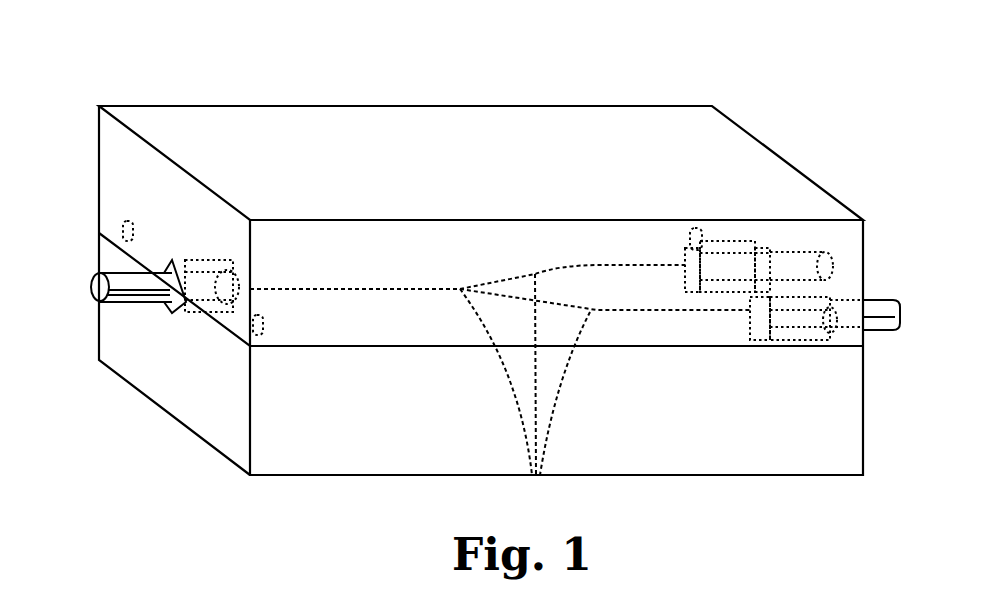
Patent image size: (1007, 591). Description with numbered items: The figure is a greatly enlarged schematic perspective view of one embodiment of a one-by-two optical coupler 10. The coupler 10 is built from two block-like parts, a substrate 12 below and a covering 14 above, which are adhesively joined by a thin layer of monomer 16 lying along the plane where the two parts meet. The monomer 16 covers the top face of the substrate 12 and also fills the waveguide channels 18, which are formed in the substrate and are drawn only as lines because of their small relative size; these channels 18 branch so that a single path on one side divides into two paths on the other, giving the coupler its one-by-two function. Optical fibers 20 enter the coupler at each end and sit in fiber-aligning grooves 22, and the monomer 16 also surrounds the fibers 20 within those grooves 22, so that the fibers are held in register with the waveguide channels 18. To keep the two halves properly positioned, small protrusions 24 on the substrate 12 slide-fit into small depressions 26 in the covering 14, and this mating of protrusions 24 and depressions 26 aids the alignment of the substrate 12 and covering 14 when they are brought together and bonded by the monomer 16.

The optical coupler 10 is at (481, 275).
The substrate 12 is at (329, 480).
The covering 14 is at (302, 100).
The monomer 16 is at (247, 330).
The waveguide channels 18 is at (500, 386).
The optical fibers 20 is at (92, 287).
The fiber-aligning grooves 22 is at (195, 260).
The protrusions 24 is at (248, 360).
The depressions 26 is at (262, 326).